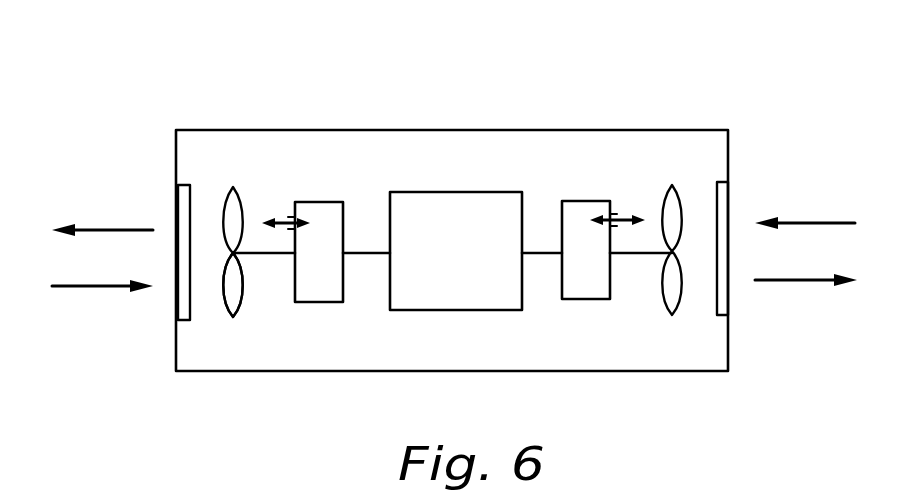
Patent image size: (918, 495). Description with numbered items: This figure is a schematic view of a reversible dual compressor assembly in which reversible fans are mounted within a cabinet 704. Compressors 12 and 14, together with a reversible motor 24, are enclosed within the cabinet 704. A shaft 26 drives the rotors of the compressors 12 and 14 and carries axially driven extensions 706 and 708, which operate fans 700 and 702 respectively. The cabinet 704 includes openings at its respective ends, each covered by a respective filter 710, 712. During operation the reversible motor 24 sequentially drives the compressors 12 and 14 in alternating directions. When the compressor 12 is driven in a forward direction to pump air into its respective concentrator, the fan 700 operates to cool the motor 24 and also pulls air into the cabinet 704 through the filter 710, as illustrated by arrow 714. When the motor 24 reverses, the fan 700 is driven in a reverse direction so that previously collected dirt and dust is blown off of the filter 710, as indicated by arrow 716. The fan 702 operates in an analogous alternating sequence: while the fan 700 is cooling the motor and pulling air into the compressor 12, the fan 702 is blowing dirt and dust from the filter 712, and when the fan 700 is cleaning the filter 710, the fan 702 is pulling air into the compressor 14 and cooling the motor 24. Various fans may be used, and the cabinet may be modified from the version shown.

The cabinet 704 is at (278, 130).
The axially driven extension 706 is at (258, 253).
The fan 700 is at (236, 318).
The fan 702 is at (673, 315).
The filter 710 is at (176, 205).
The filter 712 is at (725, 198).
The compressor 12 is at (326, 202).
The compressor 14 is at (597, 201).
The reversible motor 24 is at (462, 192).
The shaft 26 is at (372, 253).
The axially driven extension 708 is at (637, 253).
The arrow 714 is at (100, 288).
The arrow 716 is at (125, 228).